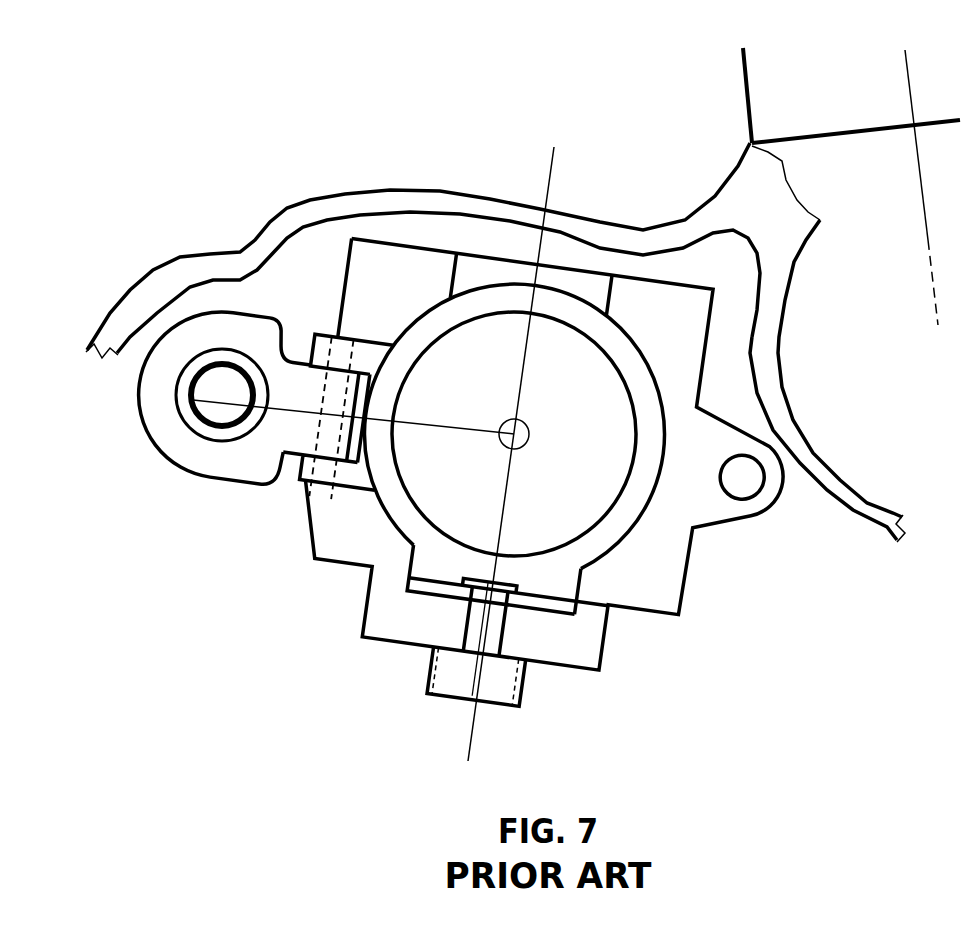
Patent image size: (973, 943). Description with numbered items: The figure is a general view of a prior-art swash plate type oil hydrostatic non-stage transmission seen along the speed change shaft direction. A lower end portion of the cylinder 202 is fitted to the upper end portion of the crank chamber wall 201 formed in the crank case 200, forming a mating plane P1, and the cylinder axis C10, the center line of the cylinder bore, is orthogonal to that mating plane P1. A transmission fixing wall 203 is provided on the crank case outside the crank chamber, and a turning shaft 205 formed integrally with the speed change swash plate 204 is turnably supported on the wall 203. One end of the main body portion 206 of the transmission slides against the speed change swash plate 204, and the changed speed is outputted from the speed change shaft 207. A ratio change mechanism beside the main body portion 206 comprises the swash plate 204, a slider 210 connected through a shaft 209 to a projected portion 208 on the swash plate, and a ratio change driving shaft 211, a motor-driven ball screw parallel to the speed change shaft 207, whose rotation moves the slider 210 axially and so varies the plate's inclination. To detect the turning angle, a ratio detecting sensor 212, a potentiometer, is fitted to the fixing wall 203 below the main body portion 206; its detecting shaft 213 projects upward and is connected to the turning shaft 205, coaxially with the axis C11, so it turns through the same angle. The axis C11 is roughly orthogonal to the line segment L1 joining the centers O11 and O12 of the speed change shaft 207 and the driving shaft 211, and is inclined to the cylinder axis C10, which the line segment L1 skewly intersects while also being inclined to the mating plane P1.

The crank case 200 is at (423, 249).
The crank chamber wall 201 is at (827, 372).
The cylinder 202 is at (704, 95).
The transmission fixing wall 203 is at (546, 464).
The speed change swash plate 204 is at (747, 497).
The turning shaft 205 is at (544, 405).
The main body portion 206 is at (567, 598).
The speed change shaft 207 is at (547, 421).
The projected portion 208 is at (347, 317).
The shaft 209 is at (320, 382).
The slider 210 is at (222, 351).
The ratio change driving shaft 211 is at (161, 420).
The ratio detecting sensor 212 is at (502, 681).
The detecting shaft 213 is at (450, 665).
The mating plane P1 is at (856, 159).
The cylinder axis C10 is at (912, 172).
The axis of the turning shaft C11 is at (525, 435).
The line segment L1 is at (353, 394).
The center of the speed change shaft O11 is at (468, 452).
The center of the ratio change driving shaft O12 is at (232, 450).